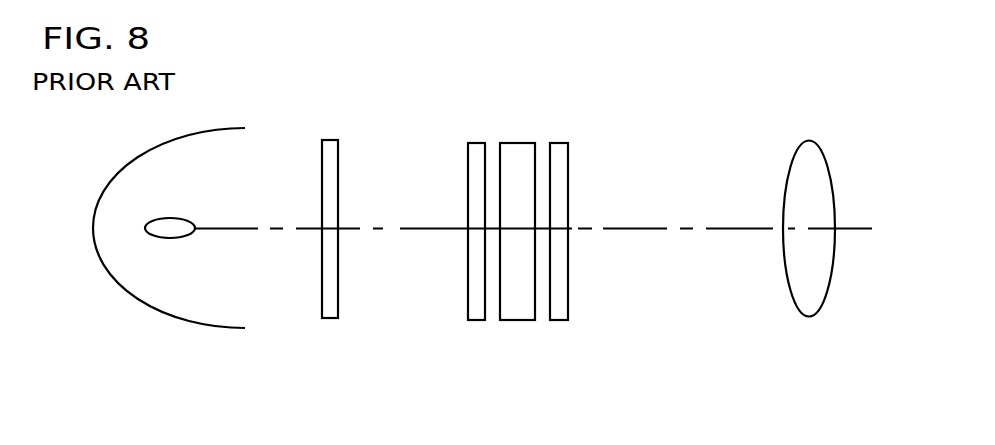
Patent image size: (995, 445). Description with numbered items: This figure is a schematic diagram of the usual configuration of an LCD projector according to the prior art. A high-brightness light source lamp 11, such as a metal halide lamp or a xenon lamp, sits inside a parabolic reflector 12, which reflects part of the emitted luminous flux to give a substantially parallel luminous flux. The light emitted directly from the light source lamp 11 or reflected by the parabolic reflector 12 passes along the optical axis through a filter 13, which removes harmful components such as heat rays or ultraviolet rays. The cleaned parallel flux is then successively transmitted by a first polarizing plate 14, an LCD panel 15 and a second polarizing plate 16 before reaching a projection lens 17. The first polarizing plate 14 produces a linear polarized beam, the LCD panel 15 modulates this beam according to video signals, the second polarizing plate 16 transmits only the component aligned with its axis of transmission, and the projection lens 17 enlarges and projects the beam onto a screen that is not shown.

The light source lamp 11 is at (162, 218).
The parabolic reflector 12 is at (180, 320).
The filter 13 is at (330, 140).
The first polarizing plate 14 is at (475, 143).
The LCD panel 15 is at (513, 320).
The second polarizing plate 16 is at (560, 143).
The projection lens 17 is at (806, 140).